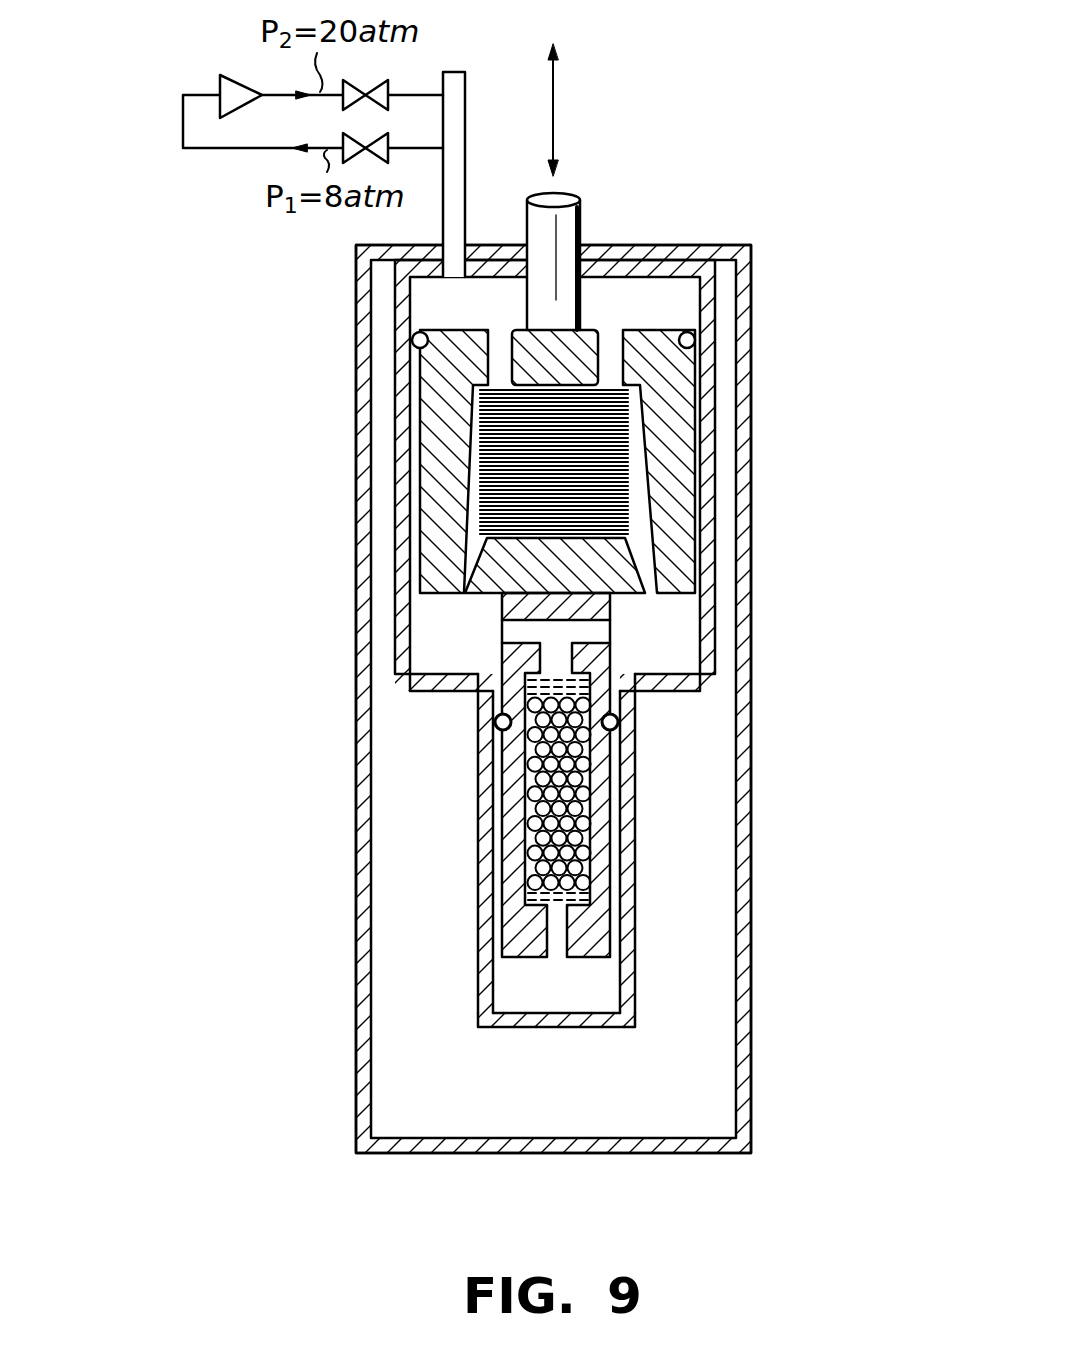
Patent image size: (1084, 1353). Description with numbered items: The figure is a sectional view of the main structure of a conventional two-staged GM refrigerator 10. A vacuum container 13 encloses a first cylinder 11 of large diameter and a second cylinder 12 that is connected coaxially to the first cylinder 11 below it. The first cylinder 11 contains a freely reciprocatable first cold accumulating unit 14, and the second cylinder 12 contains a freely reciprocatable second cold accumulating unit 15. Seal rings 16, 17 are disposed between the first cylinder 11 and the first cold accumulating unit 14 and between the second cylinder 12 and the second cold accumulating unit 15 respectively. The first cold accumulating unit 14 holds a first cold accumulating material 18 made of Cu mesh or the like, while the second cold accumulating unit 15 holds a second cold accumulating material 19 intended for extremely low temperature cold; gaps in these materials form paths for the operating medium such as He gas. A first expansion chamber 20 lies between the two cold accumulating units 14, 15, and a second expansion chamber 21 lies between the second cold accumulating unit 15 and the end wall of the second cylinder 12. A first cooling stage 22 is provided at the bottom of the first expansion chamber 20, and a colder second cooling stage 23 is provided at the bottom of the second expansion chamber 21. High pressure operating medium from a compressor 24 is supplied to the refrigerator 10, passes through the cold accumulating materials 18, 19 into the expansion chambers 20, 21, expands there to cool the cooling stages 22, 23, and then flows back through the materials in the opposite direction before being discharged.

The two-staged GM refrigerator 10 is at (747, 209).
The first cylinder 11 is at (396, 462).
The second cylinder 12 is at (478, 777).
The vacuum container 13 is at (358, 976).
The first cold accumulating unit 14 is at (708, 503).
The second cold accumulating unit 15 is at (605, 927).
The seal ring 16 is at (695, 340).
The seal ring 17 is at (619, 722).
The first cold accumulating material 18 is at (623, 442).
The second cold accumulating material 19 is at (573, 810).
The first expansion chamber 20 is at (663, 648).
The second expansion chamber 21 is at (597, 985).
The first cooling stage 22 is at (700, 692).
The second cooling stage 23 is at (607, 1028).
The compressor 24 is at (220, 75).